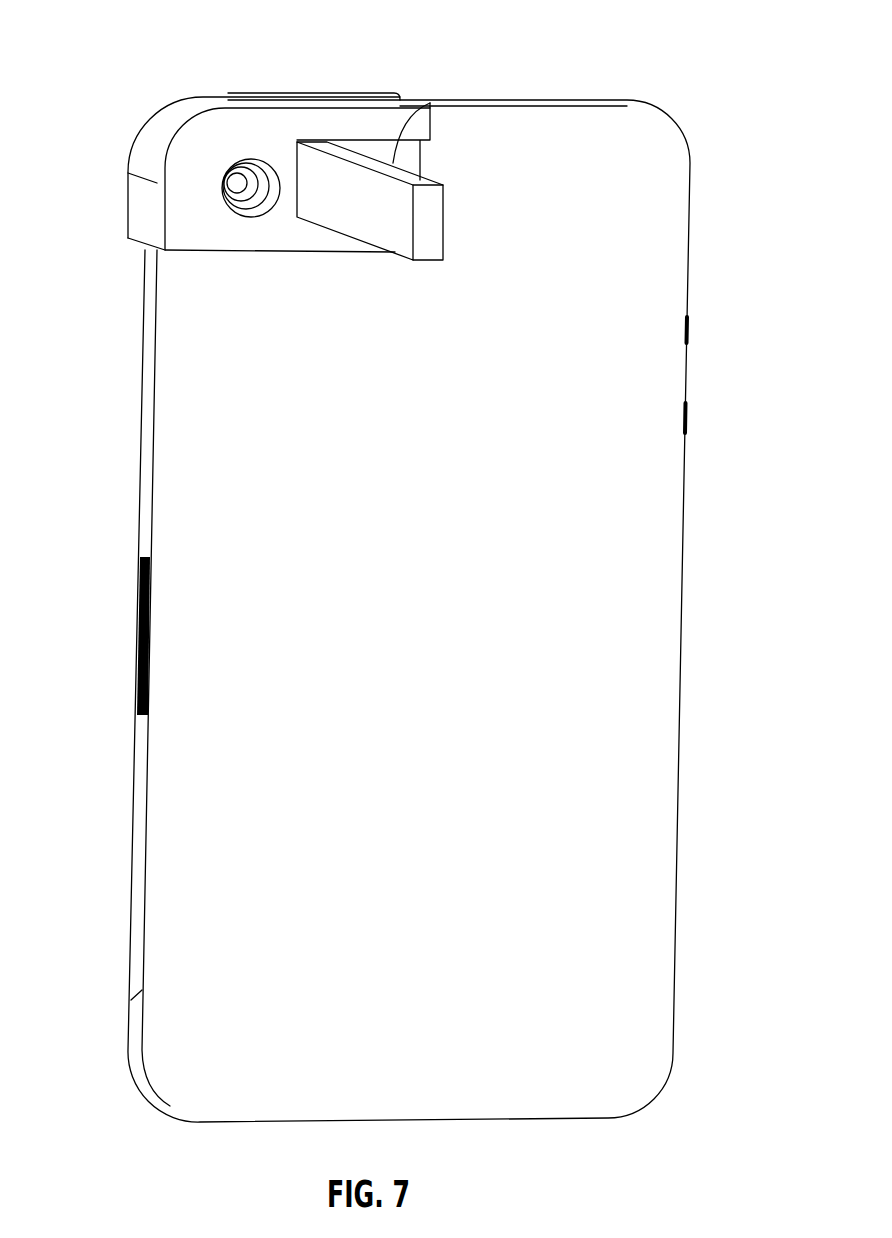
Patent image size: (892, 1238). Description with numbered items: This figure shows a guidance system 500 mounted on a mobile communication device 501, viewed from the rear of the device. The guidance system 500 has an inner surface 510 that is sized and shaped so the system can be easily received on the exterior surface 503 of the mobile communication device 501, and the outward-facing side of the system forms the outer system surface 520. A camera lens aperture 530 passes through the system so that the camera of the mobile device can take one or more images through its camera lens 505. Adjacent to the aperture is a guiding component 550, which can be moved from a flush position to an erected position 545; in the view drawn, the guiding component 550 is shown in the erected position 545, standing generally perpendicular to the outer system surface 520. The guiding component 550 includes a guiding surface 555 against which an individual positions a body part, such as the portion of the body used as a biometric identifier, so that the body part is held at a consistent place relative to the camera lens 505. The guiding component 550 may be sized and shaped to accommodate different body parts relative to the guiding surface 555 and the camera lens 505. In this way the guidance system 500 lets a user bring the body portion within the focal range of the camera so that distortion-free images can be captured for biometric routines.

The guidance system 500 is at (118, 110).
The mobile communication device 501 is at (718, 192).
The exterior surface 503 is at (617, 123).
The camera lens 505 is at (232, 162).
The inner surface 510 is at (352, 95).
The outer system surface 520 is at (197, 233).
The camera lens aperture 530 is at (213, 192).
The erected position 545 is at (502, 100).
The guiding component 550 is at (437, 102).
The guiding surface 555 is at (360, 187).